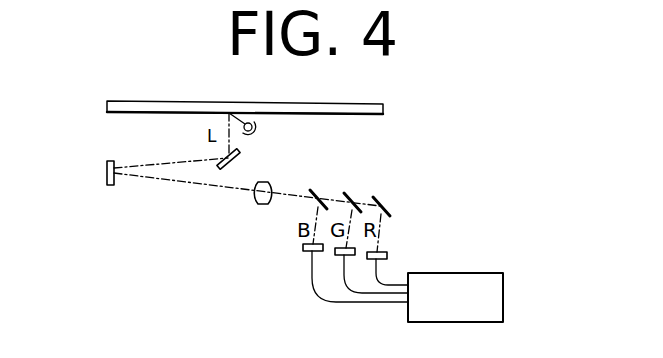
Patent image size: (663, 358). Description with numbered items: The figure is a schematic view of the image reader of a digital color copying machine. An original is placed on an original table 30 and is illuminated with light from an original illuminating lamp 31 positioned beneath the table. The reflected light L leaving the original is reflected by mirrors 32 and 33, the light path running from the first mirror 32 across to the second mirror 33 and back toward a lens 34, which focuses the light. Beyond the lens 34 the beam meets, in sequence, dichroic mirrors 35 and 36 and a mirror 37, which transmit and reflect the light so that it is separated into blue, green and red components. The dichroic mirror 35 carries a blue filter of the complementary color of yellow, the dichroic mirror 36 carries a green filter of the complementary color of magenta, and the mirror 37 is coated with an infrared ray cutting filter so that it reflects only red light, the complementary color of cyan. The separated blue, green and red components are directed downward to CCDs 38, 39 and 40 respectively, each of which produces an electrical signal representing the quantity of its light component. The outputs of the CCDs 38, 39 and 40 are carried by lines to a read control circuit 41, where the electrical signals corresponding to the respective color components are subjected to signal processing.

The original table 30 is at (377, 82).
The original illuminating lamp 31 is at (258, 131).
The mirror 32 is at (240, 153).
The mirror 33 is at (107, 172).
The lens 34 is at (262, 205).
The dichroic mirror 35 is at (318, 196).
The dichroic mirror 36 is at (352, 199).
The mirror 37 is at (383, 203).
The CCD 38 is at (303, 247).
The CCD 39 is at (338, 255).
The CCD 40 is at (385, 253).
The read control circuit 41 is at (504, 297).